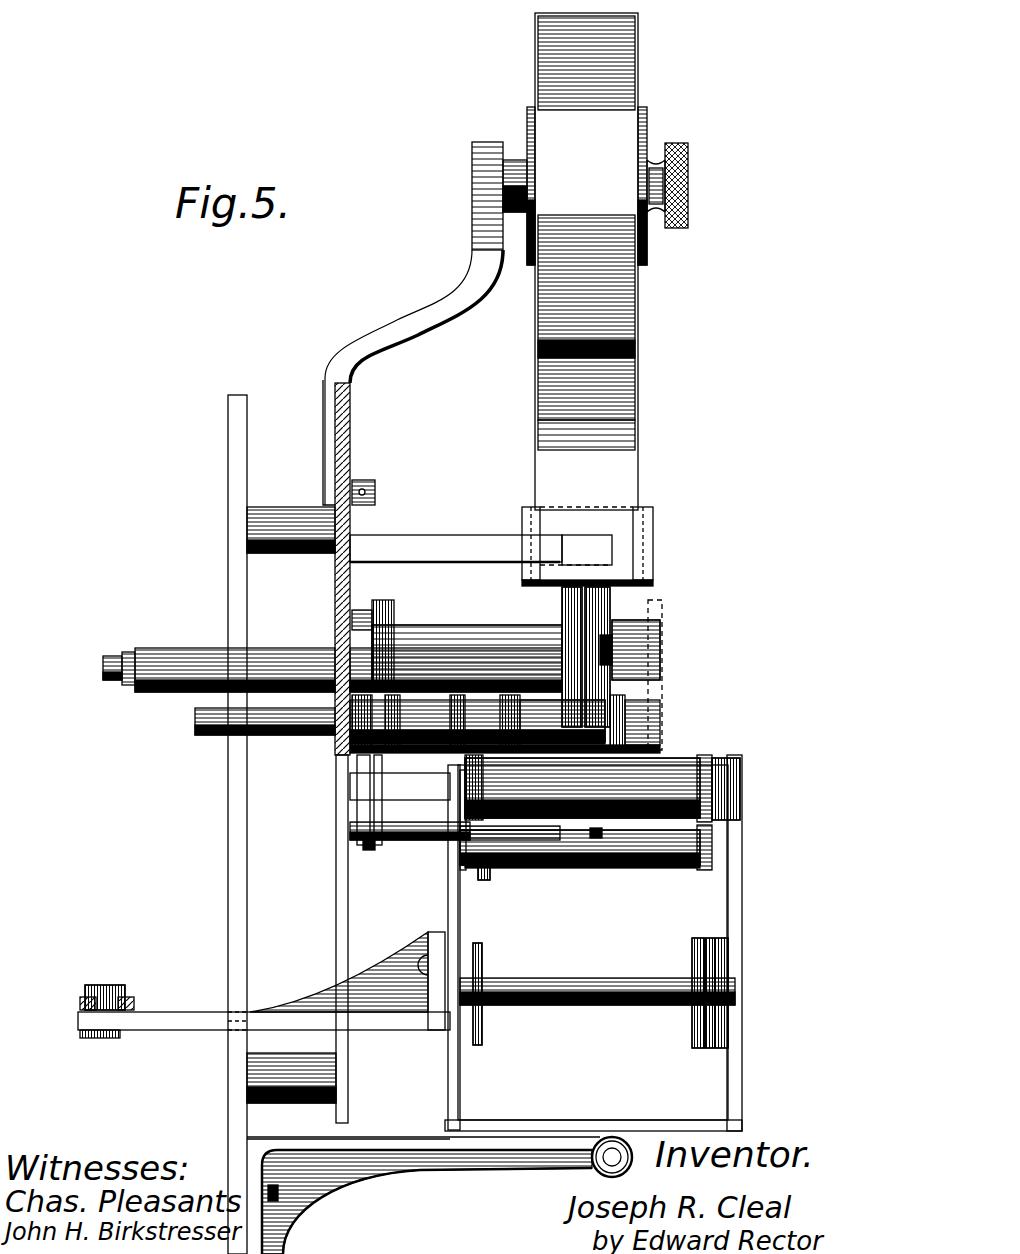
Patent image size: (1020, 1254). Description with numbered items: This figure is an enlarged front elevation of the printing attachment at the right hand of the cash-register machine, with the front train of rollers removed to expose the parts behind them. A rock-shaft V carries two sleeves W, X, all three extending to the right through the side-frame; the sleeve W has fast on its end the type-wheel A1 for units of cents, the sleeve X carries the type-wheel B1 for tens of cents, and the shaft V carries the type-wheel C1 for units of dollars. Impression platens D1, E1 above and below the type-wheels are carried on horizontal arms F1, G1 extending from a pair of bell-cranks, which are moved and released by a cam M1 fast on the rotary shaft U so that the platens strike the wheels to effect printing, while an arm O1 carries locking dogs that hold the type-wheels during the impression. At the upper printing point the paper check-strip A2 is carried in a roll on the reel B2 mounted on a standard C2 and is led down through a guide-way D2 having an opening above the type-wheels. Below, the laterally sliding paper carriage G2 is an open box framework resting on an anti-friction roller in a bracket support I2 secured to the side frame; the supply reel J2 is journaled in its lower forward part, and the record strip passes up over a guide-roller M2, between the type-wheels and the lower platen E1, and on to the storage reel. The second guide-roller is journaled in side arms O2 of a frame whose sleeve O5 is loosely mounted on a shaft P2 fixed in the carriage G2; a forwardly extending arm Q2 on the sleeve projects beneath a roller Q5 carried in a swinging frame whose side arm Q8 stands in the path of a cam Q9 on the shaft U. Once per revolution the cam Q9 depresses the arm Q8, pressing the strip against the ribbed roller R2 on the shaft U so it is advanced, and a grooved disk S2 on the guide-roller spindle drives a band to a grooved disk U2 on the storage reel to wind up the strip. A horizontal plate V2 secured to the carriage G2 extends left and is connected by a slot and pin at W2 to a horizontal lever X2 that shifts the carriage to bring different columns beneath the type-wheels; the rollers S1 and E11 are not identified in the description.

The paper check-strip A2 is at (676, 590).
The reel B2 is at (682, 140).
The standard C2 is at (472, 236).
The horizontal arm F1 is at (447, 545).
The impression platen D1 is at (592, 548).
The guide-way D2 is at (650, 528).
The sleeve W is at (448, 660).
The rock-shaft V is at (106, 656).
The sleeve X is at (128, 652).
The rotary shaft U is at (275, 735).
The cam M1 is at (330, 738).
The roll S1 is at (455, 748).
The sleeve or roller R2 is at (590, 721).
The type-wheel A1 is at (562, 600).
The type-wheel B1 is at (610, 600).
The type-wheel C1 is at (640, 630).
The cam Q9 is at (355, 760).
The horizontal arm G1 is at (400, 786).
The roller Q5 is at (410, 820).
The side arm Q8 is at (368, 852).
The paper carriage G2 is at (742, 910).
The impression platen E1 is at (665, 770).
The guide-roller M2 is at (680, 780).
The grooved disk S2 is at (742, 776).
The lower feed roll E11 is at (580, 840).
The side arms O2 is at (712, 852).
The sleeve O5 is at (618, 866).
The shaft P2 is at (582, 885).
The arm O1 is at (460, 868).
The forwardly extending arm Q2 is at (484, 880).
The supply reel J2 is at (590, 978).
The grooved disk U2 is at (728, 960).
The horizontal plate V2 is at (405, 1030).
The slot and pin connection W2 is at (115, 988).
The horizontal lever X2 is at (134, 1002).
The bracket support I2 is at (372, 1172).